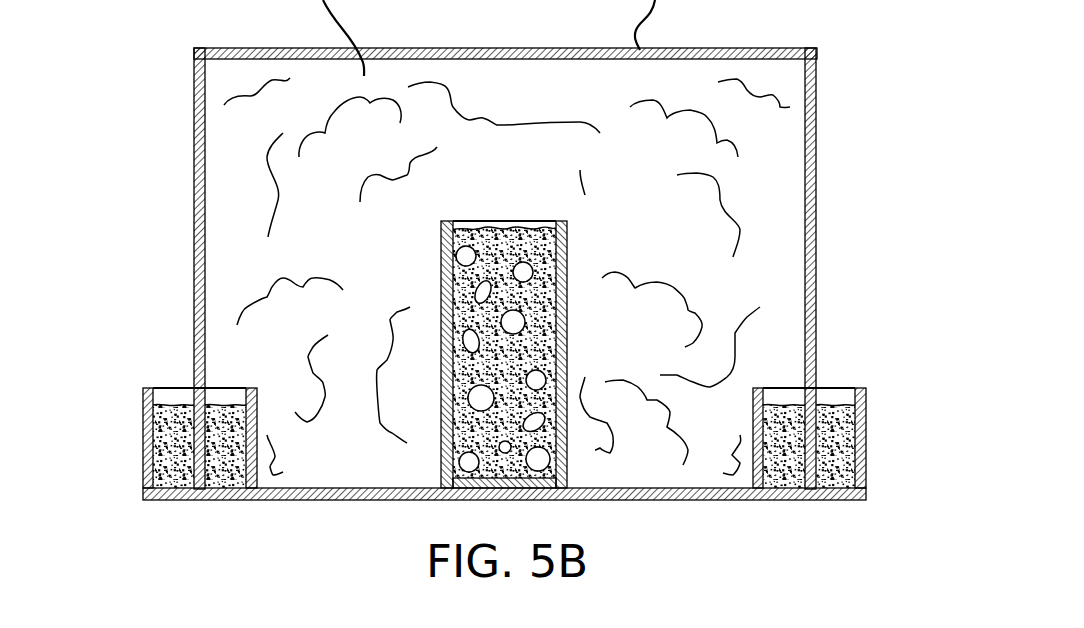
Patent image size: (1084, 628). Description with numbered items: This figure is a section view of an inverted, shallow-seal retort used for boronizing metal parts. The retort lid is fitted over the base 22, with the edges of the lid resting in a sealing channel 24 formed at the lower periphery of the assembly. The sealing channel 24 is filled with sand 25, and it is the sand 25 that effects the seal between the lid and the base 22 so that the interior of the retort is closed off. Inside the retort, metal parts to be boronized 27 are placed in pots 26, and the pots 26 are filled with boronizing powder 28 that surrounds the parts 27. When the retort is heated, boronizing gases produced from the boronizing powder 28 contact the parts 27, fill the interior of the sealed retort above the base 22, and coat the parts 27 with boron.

The base 22 is at (677, 500).
The sealing channel 24 is at (143, 408).
The sand 25 is at (835, 438).
The pots 26 is at (441, 258).
The metal parts to be boronized 27 is at (467, 338).
The boronizing powder 28 is at (465, 426).